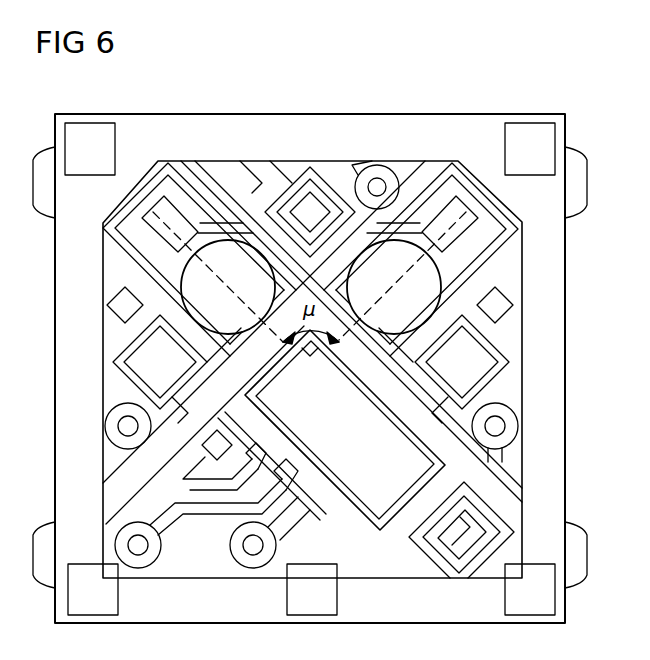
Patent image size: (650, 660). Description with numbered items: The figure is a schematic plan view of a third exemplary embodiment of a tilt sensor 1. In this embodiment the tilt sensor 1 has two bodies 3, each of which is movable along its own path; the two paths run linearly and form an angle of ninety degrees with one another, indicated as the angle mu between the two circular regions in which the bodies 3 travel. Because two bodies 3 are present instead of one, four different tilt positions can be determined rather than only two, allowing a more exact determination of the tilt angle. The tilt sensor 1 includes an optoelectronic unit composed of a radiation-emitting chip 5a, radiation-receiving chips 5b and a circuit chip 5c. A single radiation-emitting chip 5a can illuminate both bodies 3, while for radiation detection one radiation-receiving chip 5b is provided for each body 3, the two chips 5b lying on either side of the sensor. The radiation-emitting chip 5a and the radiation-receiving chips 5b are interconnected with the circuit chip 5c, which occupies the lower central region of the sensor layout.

The tilt sensor 1 is at (548, 96).
The body 3 is at (187, 274).
The radiation-emitting chip 5a is at (313, 206).
The radiation-receiving chip 5b is at (142, 357).
The circuit chip 5c is at (378, 502).